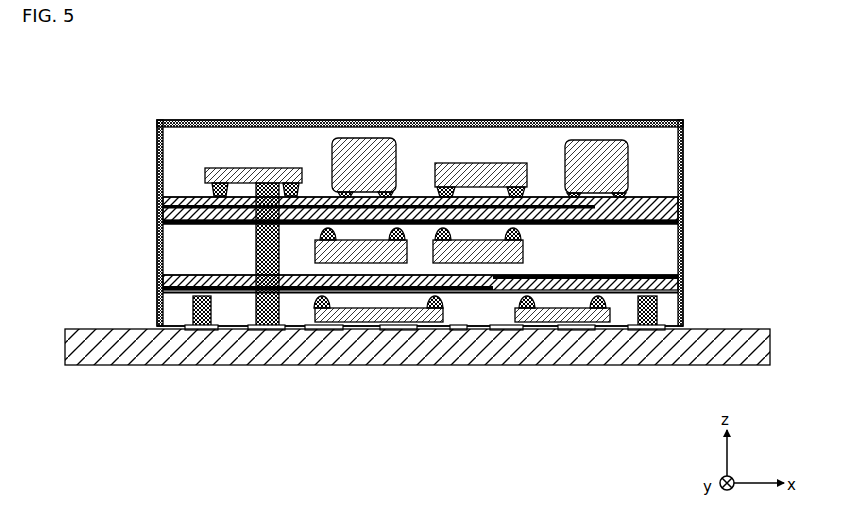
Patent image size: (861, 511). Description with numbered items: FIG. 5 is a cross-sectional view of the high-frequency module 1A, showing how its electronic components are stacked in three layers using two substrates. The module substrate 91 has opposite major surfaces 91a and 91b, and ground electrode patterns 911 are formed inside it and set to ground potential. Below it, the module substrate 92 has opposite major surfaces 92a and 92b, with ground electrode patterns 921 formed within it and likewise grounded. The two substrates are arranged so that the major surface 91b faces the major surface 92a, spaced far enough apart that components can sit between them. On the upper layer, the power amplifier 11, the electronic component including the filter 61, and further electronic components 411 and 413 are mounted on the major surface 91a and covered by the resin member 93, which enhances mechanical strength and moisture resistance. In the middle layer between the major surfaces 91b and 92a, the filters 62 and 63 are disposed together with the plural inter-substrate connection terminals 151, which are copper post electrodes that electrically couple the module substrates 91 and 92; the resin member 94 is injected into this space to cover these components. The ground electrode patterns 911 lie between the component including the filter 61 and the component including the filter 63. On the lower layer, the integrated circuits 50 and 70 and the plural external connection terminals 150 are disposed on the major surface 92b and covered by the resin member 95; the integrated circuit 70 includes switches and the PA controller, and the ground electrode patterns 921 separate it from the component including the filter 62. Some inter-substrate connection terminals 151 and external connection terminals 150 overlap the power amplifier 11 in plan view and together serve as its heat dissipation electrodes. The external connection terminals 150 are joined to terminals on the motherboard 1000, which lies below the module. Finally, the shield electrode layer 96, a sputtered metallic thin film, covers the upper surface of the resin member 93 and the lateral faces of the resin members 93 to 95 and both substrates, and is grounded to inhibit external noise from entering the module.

The high-frequency module 1A is at (628, 72).
The shield electrode layer 96 is at (680, 121).
The resin member 93 is at (664, 164).
The resin member 94 is at (664, 241).
The resin member 95 is at (665, 301).
The module substrate 91 is at (164, 208).
The major surface 91a is at (177, 196).
The major surface 91b is at (177, 229).
The ground electrode pattern 911 is at (420, 212).
The module substrate 92 is at (164, 287).
The major surface 92a is at (177, 272).
The major surface 92b is at (177, 298).
The ground electrode pattern 921 is at (505, 278).
The inter-substrate connection terminal 151 is at (256, 247).
The external connection terminal 150 is at (258, 305).
The power amplifier 11 is at (243, 167).
The electronic component 413 is at (363, 138).
The electronic component 411 is at (590, 140).
The filter 61 is at (470, 163).
The filter 62 is at (316, 243).
The filter 63 is at (524, 251).
The integrated circuit 70 is at (446, 312).
The integrated circuit 50 is at (610, 313).
The motherboard 1000 is at (404, 366).